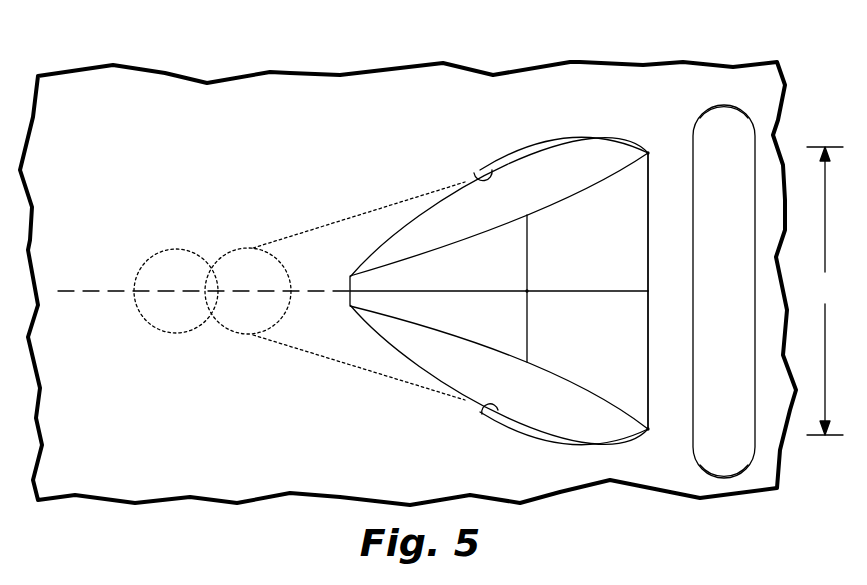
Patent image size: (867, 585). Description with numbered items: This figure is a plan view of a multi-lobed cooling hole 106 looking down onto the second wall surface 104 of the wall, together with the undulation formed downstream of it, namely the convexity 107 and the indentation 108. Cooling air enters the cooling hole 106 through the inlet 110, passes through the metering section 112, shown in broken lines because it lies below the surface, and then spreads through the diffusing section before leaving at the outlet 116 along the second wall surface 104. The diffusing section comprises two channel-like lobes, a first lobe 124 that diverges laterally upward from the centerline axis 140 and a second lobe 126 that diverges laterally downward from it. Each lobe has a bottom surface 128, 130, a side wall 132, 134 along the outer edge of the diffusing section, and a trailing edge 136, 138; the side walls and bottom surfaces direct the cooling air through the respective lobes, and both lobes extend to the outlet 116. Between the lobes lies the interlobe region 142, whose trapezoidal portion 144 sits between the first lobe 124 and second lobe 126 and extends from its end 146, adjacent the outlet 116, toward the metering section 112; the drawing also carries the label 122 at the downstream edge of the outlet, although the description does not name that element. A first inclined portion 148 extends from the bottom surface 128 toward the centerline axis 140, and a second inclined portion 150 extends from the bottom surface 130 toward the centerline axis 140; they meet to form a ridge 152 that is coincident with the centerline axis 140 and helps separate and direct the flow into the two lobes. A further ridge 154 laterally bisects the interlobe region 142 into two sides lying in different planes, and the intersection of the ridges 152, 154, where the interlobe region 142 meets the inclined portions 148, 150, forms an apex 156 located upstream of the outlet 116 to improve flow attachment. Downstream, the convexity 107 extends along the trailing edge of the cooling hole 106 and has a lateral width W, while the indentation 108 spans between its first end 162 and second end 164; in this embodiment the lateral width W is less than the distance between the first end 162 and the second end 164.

The second wall surface 104 is at (110, 116).
The cooling hole 106 is at (438, 222).
The convexity 107 is at (667, 365).
The indentation 108 is at (727, 140).
The inlet 110 is at (169, 320).
The metering section 112 is at (212, 327).
The outlet 116 is at (652, 323).
The trailing edge 122 is at (670, 250).
The first lobe 124 is at (599, 135).
The second lobe 126 is at (581, 448).
The bottom surface 128 is at (528, 186).
The bottom surface 130 is at (528, 412).
The side wall 132 is at (493, 170).
The side wall 134 is at (490, 410).
The trailing edge 136 is at (650, 150).
The trailing edge 138 is at (644, 427).
The centerline axis 140 is at (65, 290).
The interlobe region 142 is at (606, 264).
The portion 144 is at (588, 356).
The end 146 is at (649, 198).
The first inclined portion 148 is at (428, 278).
The second inclined portion 150 is at (455, 321).
The ridge 152 is at (472, 292).
The ridge 154 is at (548, 290).
The apex 156 is at (530, 294).
The first end 162 is at (720, 105).
The second end 164 is at (724, 478).
The lateral width W is at (825, 291).